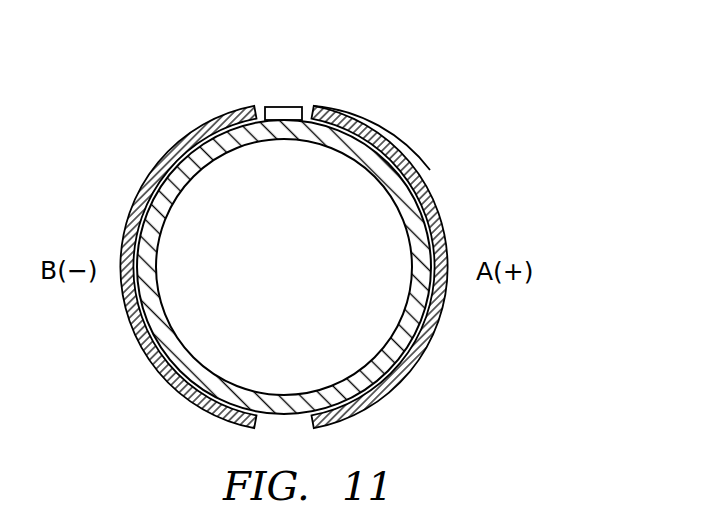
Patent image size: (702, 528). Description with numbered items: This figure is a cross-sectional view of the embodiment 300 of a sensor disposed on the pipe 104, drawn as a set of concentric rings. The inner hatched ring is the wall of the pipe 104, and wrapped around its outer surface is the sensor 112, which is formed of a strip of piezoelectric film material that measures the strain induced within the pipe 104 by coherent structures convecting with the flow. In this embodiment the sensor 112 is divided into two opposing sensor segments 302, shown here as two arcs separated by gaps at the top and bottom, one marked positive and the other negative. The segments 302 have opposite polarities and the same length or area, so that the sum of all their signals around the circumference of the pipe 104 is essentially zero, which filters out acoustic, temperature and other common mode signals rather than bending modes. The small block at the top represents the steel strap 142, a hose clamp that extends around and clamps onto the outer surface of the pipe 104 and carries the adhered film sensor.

The embodiment 300 is at (303, 236).
The sensor segments 302 is at (121, 228).
The pipe 104 is at (388, 177).
The sensor 112 is at (370, 123).
The steel strap 142 is at (327, 113).